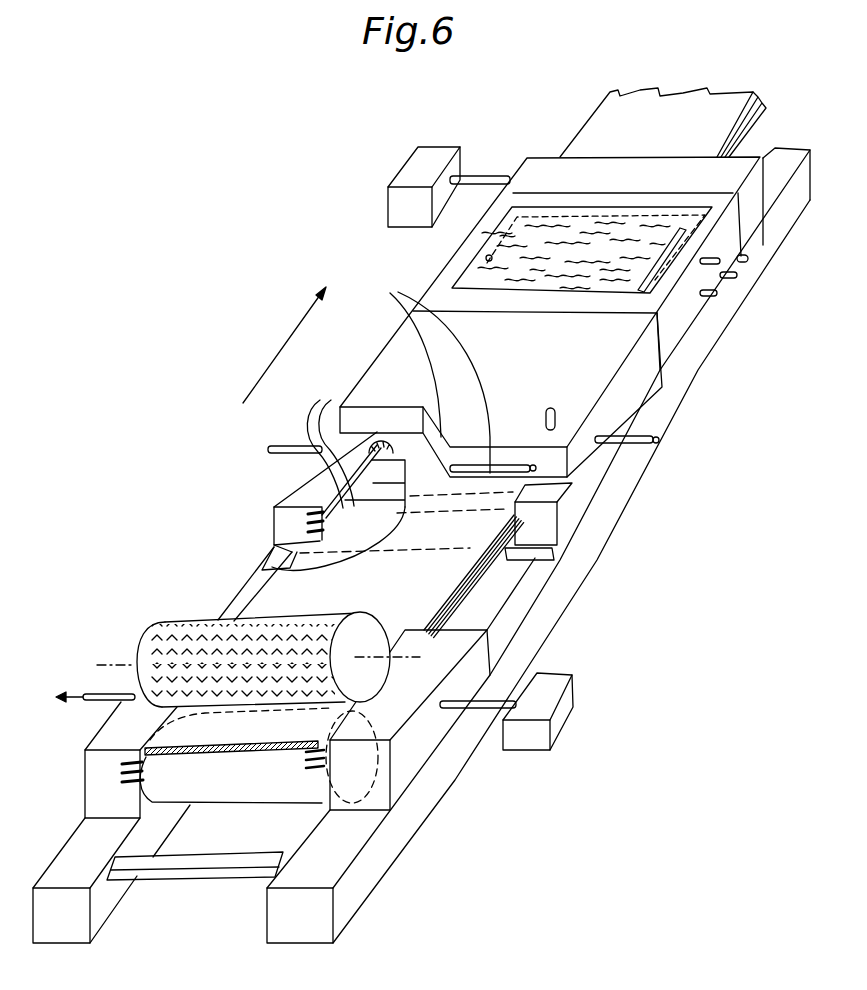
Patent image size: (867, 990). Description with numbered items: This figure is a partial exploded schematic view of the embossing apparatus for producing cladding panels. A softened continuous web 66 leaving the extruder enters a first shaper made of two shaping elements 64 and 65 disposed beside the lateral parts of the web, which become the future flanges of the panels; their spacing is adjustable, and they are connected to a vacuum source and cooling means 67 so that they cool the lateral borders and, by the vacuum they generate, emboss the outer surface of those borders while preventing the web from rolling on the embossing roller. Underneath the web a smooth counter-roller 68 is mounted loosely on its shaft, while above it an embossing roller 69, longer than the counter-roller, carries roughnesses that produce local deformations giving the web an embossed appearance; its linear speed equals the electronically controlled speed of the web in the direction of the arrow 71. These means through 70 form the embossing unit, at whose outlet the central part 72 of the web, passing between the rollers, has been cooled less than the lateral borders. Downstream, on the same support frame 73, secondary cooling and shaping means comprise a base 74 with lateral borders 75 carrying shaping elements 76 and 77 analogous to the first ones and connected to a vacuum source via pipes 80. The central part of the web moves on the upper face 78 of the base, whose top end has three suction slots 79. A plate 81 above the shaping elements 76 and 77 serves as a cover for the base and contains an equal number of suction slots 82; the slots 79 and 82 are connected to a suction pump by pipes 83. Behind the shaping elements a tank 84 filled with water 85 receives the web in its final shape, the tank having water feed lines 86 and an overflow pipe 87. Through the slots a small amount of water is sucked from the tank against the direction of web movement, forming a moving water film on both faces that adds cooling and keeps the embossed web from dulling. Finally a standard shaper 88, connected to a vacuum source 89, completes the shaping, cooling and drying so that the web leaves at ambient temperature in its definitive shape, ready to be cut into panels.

The shaping element 64 is at (411, 762).
The shaping element 65 is at (95, 805).
The continuous web 66 is at (233, 753).
The vacuum source and cooling means 67 is at (537, 748).
The smooth counter-roller 68 is at (286, 779).
The embossing roller 69 is at (165, 626).
The embossing unit means 70 is at (227, 655).
The arrow indicating direction of web travel 71 is at (300, 338).
The central part of the web 72 is at (430, 593).
The support frame 73 is at (605, 513).
The base 74 is at (262, 570).
The lateral borders 75 is at (276, 547).
The shaping element 76 is at (568, 508).
The shaping element 77 is at (296, 498).
The upper face of the base 78 is at (328, 510).
The suction slots 79 is at (323, 442).
The pipes 80 is at (284, 446).
The plate 81 is at (393, 368).
The suction slots 82 is at (428, 367).
The pipes 83 is at (557, 420).
The tank 84 is at (440, 284).
The water 85 is at (530, 240).
The water feed lines 86 is at (720, 262).
The overflow pipe 87 is at (728, 250).
The standard shaper 88 is at (557, 172).
The vacuum source 89 is at (428, 158).